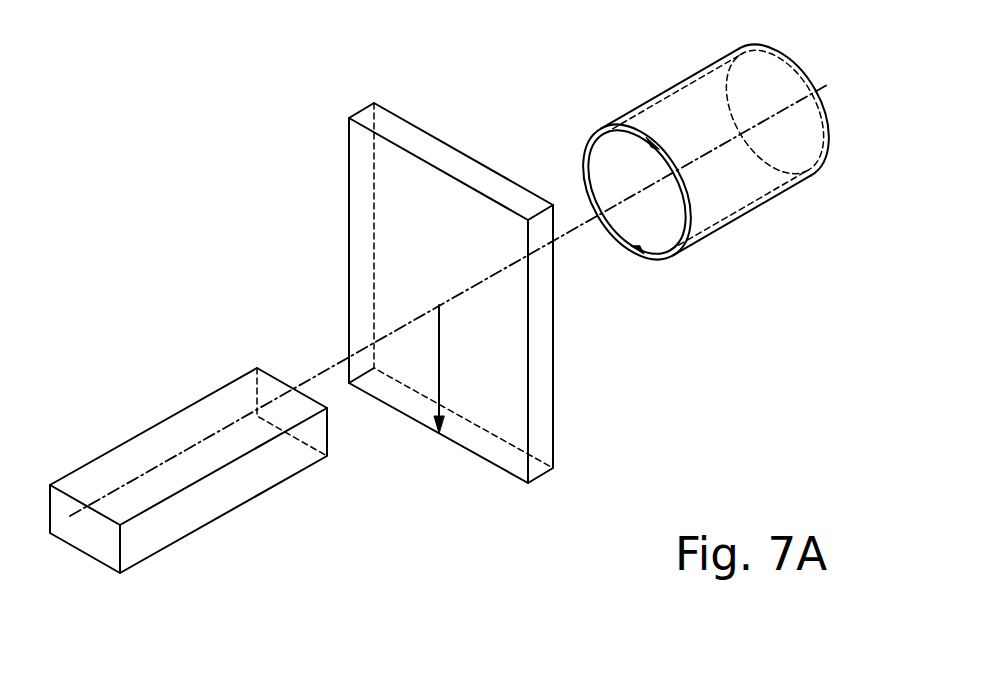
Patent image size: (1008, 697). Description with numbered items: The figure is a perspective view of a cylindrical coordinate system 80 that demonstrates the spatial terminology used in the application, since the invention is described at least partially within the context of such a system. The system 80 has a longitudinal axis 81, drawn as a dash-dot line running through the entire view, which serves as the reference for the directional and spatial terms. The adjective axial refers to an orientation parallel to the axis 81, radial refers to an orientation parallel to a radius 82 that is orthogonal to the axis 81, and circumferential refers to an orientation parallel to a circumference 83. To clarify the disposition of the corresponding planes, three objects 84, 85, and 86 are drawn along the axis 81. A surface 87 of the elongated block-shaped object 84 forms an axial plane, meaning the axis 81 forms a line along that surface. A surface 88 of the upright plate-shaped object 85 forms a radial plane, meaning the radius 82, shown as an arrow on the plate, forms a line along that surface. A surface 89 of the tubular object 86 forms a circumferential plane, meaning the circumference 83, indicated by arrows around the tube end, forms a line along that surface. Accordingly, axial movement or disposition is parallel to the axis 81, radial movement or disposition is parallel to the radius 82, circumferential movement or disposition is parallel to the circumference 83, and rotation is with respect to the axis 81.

The cylindrical coordinate system 80 is at (297, 158).
The longitudinal axis 81 is at (818, 88).
The radius 82 is at (440, 362).
The circumference 83 is at (583, 152).
The object 84 is at (188, 502).
The object 85 is at (456, 316).
The object 86 is at (668, 159).
The surface 87 is at (143, 450).
The surface 88 is at (365, 247).
The surface 89 is at (668, 147).